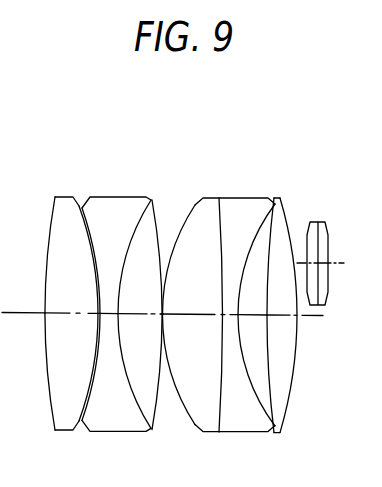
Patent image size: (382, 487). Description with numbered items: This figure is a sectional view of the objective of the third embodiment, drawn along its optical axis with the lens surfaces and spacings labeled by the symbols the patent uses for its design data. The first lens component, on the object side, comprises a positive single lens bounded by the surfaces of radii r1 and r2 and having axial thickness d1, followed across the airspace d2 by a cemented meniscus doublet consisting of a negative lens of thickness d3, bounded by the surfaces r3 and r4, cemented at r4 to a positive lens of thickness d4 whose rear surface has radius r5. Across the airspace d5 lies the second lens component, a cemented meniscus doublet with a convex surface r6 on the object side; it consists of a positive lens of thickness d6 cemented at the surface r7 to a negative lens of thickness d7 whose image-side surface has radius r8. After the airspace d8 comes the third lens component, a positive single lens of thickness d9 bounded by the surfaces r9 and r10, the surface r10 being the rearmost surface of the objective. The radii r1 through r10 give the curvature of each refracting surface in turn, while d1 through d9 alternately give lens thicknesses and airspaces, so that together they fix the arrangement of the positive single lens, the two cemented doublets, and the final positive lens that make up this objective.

The radius of curvature of first lens surface r1 is at (52, 226).
The radius of curvature of second lens surface r2 is at (85, 228).
The radius of curvature of third lens surface r3 is at (90, 228).
The radius of curvature of fourth lens surface r4 is at (134, 228).
The radius of curvature of fifth lens surface r5 is at (156, 222).
The radius of curvature of sixth lens surface r6 is at (183, 228).
The radius of curvature of seventh lens surface r7 is at (221, 228).
The radius of curvature of eighth lens surface r8 is at (263, 222).
The radius of curvature of ninth lens surface r9 is at (278, 199).
The radius of curvature of tenth lens surface r10 is at (294, 230).
The thickness of first lens d1 is at (68, 318).
The airspace between first lens and cemented doublet d2 is at (97, 311).
The thickness of negative lens of first doublet d3 is at (111, 318).
The thickness of positive lens of first doublet d4 is at (138, 318).
The airspace between first and second lens components d5 is at (164, 313).
The thickness of positive lens of second doublet d6 is at (193, 318).
The thickness of negative lens of second doublet d7 is at (231, 318).
The airspace between second and third lens components d8 is at (253, 287).
The thickness of third lens component d9 is at (284, 318).